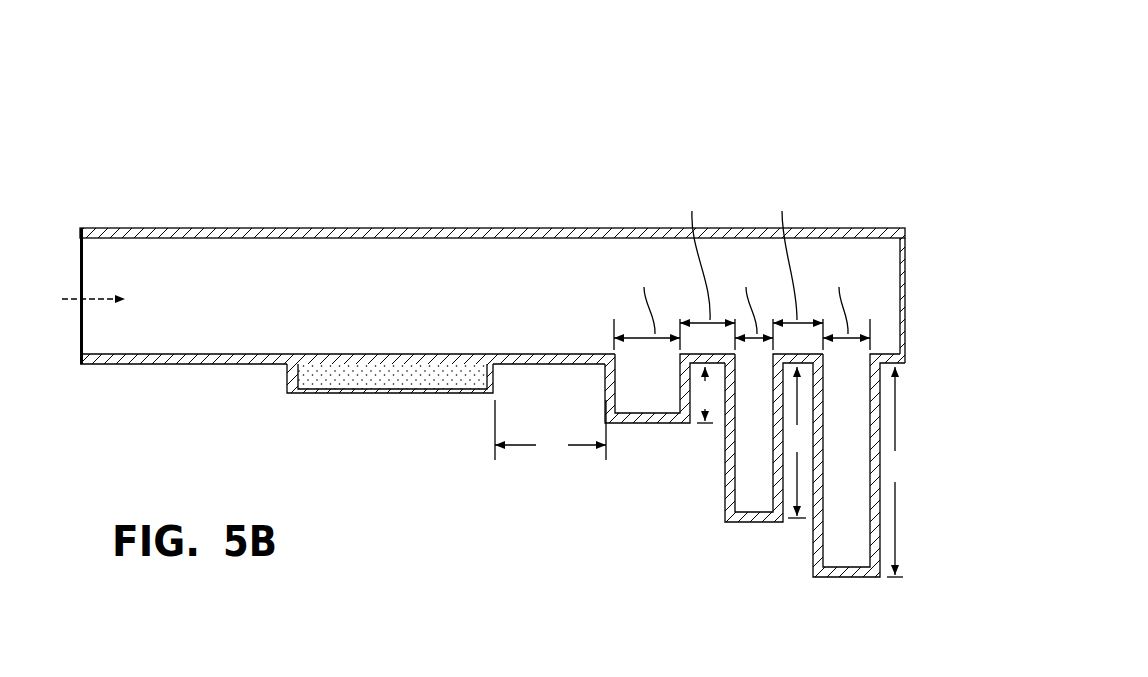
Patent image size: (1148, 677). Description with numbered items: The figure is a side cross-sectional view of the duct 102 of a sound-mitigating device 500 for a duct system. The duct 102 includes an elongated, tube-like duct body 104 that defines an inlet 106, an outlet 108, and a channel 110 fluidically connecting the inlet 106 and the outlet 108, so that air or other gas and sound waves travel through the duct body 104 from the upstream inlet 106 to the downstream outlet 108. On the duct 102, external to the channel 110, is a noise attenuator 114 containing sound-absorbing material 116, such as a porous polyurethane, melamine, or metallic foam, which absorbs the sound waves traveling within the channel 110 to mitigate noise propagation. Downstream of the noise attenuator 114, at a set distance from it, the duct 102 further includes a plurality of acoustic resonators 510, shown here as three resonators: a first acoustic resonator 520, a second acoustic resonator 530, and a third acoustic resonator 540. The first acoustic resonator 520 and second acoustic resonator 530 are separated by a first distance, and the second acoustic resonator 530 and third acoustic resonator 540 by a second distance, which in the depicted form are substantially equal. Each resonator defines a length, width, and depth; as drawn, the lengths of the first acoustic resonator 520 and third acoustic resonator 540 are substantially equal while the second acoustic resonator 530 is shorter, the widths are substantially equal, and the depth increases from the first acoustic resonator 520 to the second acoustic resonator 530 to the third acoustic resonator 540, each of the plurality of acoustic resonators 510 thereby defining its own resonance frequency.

The sound-mitigating device 500 is at (500, 107).
The duct 102 is at (485, 228).
The duct body 104 is at (548, 228).
The inlet 106 is at (80, 228).
The outlet 108 is at (903, 228).
The channel 110 is at (877, 288).
The noise attenuator 114 is at (375, 395).
The sound-absorbing material 116 is at (321, 378).
The plurality of acoustic resonators 510 is at (755, 495).
The first acoustic resonator 520 is at (653, 425).
The second acoustic resonator 530 is at (725, 505).
The third acoustic resonator 540 is at (821, 465).